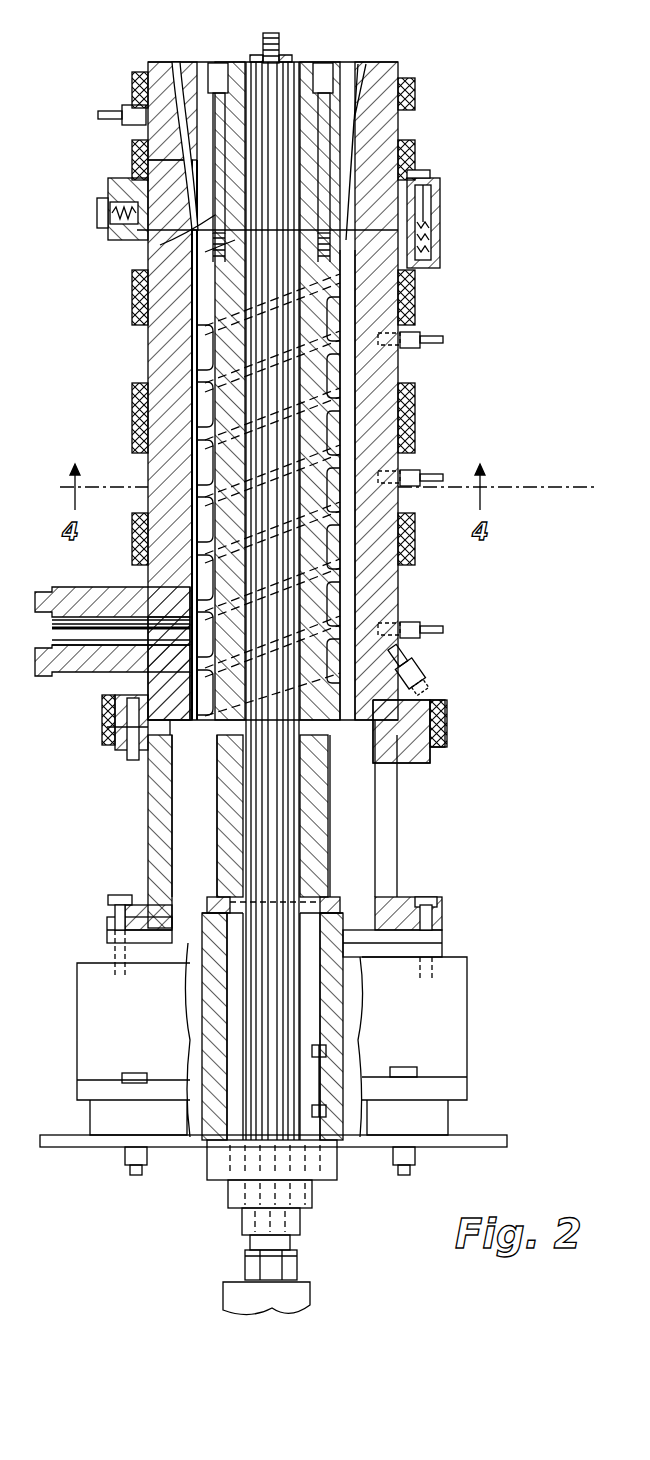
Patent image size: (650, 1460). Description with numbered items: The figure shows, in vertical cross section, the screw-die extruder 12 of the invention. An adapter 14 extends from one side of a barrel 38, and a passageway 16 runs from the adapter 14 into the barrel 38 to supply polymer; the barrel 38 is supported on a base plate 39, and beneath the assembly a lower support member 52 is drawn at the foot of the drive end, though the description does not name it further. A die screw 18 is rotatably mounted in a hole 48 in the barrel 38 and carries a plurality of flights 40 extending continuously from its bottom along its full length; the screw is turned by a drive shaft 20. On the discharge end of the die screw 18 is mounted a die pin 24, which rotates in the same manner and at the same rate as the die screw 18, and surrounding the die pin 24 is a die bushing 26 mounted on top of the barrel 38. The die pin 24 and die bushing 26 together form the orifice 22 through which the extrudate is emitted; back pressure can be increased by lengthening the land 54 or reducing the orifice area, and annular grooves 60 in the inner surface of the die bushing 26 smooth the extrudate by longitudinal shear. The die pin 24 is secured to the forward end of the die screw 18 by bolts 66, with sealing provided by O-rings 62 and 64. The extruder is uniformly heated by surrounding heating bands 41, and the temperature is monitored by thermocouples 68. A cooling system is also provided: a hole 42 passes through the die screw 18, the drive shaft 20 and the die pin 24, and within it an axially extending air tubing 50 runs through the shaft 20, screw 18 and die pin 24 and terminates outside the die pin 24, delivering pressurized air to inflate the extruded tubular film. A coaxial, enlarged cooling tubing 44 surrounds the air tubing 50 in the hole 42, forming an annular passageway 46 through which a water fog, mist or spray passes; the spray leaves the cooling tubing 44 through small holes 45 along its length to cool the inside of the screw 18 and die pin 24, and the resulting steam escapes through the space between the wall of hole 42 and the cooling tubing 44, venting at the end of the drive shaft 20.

The screw-die extruder 12 is at (403, 502).
The adapter 14 is at (87, 595).
The passageway 16 is at (60, 630).
The die screw 18 is at (217, 437).
The drive shaft 20 is at (328, 870).
The orifice 22 is at (360, 65).
The die pin 24 is at (378, 112).
The die bushing 26 is at (158, 165).
The barrel 38 is at (162, 350).
The base plate 39 is at (148, 1142).
The flights 40 is at (345, 604).
The heating bands 41 is at (135, 98).
The hole 42 is at (247, 870).
The cooling tubing 44 is at (293, 758).
The small hole 45 is at (295, 605).
The annular passageway 46 is at (288, 764).
The hole 48 is at (200, 518).
The air tubing 50 is at (278, 36).
The base support 52 is at (272, 1298).
The land 54 is at (122, 237).
The annular grooves 60 is at (370, 130).
The O-ring 62 is at (208, 250).
The O-ring 64 is at (293, 62).
The bolts 66 is at (227, 80).
The thermocouples 68 is at (443, 340).